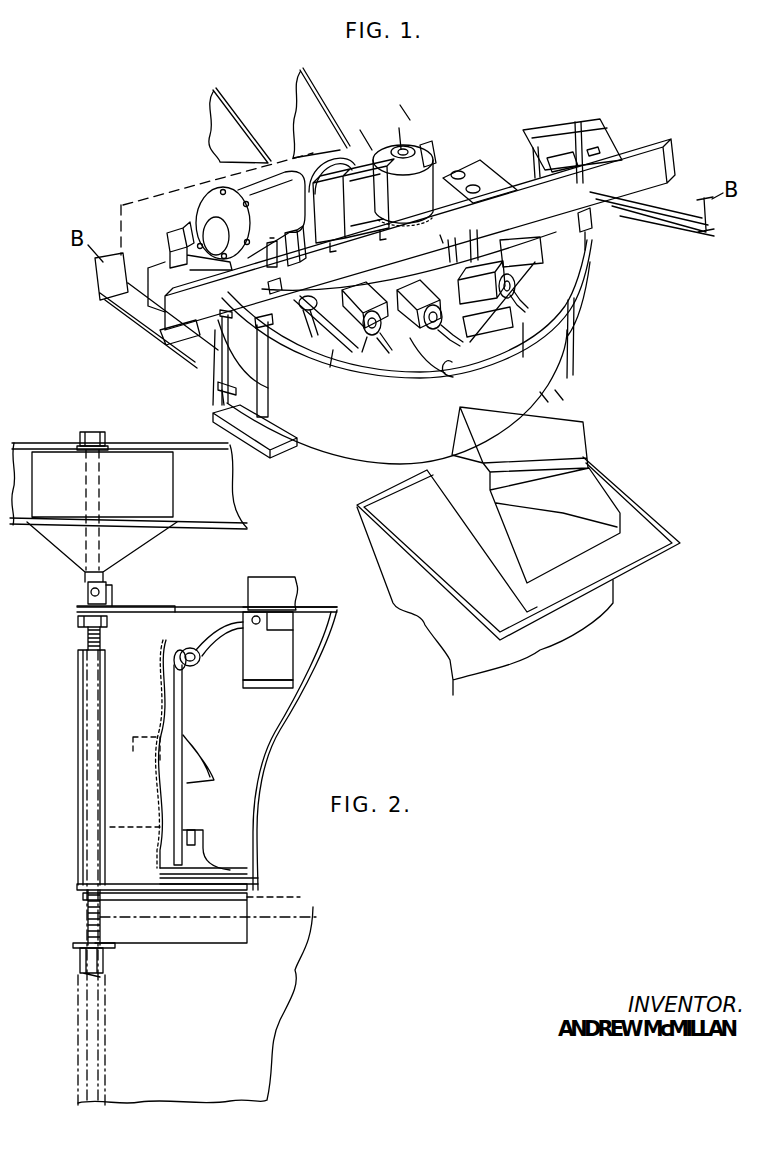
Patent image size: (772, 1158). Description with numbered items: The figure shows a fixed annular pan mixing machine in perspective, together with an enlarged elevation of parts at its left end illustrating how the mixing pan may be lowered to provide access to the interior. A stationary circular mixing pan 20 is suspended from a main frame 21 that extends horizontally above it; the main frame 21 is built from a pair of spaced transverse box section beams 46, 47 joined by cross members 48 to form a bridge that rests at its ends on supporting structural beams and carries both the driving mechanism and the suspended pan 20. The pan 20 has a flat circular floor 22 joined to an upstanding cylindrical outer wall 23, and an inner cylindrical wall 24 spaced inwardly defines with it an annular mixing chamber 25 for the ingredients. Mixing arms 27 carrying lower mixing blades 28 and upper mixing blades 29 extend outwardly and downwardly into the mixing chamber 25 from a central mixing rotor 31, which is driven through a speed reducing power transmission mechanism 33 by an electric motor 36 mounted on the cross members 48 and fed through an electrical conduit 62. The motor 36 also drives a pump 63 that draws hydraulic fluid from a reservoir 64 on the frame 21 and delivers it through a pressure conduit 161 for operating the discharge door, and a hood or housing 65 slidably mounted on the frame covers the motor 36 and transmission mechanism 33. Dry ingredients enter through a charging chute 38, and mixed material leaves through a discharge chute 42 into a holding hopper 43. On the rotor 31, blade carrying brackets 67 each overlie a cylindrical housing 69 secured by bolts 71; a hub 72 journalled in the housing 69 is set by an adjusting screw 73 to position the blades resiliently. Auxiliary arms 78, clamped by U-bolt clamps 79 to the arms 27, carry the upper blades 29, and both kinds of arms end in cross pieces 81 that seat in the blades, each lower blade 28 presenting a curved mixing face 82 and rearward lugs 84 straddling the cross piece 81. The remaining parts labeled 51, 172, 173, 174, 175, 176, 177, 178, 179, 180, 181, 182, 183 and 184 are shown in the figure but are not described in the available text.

In FIG. 1, the mixing pan 20 is at (597, 283).
In FIG. 2, the mixing pan 20 is at (325, 600).
In FIG. 1, the main frame 21 is at (629, 145).
In FIG. 2, the main frame 21 is at (151, 434).
In FIG. 1, the circular floor 22 is at (548, 310).
In FIG. 2, the circular floor 22 is at (260, 877).
In FIG. 1, the outer wall 23 is at (412, 403).
In FIG. 2, the outer wall 23 is at (320, 658).
In FIG. 1, the inner cylindrical wall 24 is at (458, 376).
In FIG. 1, the mixing chamber 25 is at (523, 323).
In FIG. 2, the mixing chamber 25 is at (272, 733).
In FIG. 1, the mixing arms 27 is at (533, 267).
In FIG. 2, the mixing arms 27 is at (180, 730).
In FIG. 1, the lower mixing blades 28 is at (525, 316).
In FIG. 2, the lower mixing blades 28 is at (207, 847).
In FIG. 1, the upper mixing blades 29 is at (427, 340).
In FIG. 2, the upper mixing blades 29 is at (163, 752).
In FIG. 1, the central mixing rotor 31 is at (444, 256).
In FIG. 1, the speed reducing power transmission mechanism 33 is at (403, 185).
In FIG. 1, the electric motor 36 is at (230, 188).
In FIG. 1, the charging chute 38 is at (323, 123).
In FIG. 1, the discharge chute 42 is at (580, 437).
In FIG. 1, the holding hopper 43 is at (650, 523).
In FIG. 1, the transverse beam 46 is at (663, 160).
In FIG. 1, the transverse beam 47 is at (580, 127).
In FIG. 1, the cross members 48 is at (223, 280).
In FIG. 2, the cross members 48 is at (43, 442).
In FIG. 1, the pulley 51 is at (417, 147).
In FIG. 1, the electrical conduit 62 is at (280, 266).
In FIG. 1, the pump 63 is at (181, 296).
In FIG. 1, the reservoir 64 is at (359, 168).
In FIG. 1, the hood or housing 65 is at (436, 120).
In FIG. 1, the mixer blade carrying brackets 67 is at (410, 293).
In FIG. 2, the mixer blade carrying brackets 67 is at (283, 587).
In FIG. 2, the cylindrical housing 69 is at (263, 683).
In FIG. 2, the bolts 71 is at (290, 630).
In FIG. 1, the hub 72 is at (367, 337).
In FIG. 2, the hub 72 is at (243, 630).
In FIG. 2, the adjusting screw 73 is at (268, 646).
In FIG. 2, the auxiliary arms 78 is at (176, 664).
In FIG. 2, the U-bolt clamp 79 is at (163, 687).
In FIG. 2, the cross pieces 81 is at (157, 833).
In FIG. 2, the curved mixing face 82 is at (220, 870).
In FIG. 2, the spaced lugs 84 is at (192, 833).
In FIG. 1, the pressure conduit 161 is at (229, 283).
In FIG. 2, the plate 172 is at (126, 605).
In FIG. 2, the angle bracket 173 is at (108, 592).
In FIG. 1, the support plate 174 is at (322, 369).
In FIG. 2, the support plate 174 is at (163, 608).
In FIG. 1, the funnel support 175 is at (587, 223).
In FIG. 2, the funnel support 175 is at (87, 588).
In FIG. 2, the nut 176 is at (80, 600).
In FIG. 1, the channel 177 is at (280, 443).
In FIG. 2, the channel 177 is at (143, 930).
In FIG. 1, the plate 178 is at (477, 173).
In FIG. 2, the plate 178 is at (80, 888).
In FIG. 1, the bolt 179 is at (252, 246).
In FIG. 2, the bolt 179 is at (65, 442).
In FIG. 2, the threaded bolt 180 is at (77, 620).
In FIG. 1, the tube 181 is at (263, 381).
In FIG. 2, the tube 181 is at (80, 728).
In FIG. 2, the washer 182 is at (80, 953).
In FIG. 2, the nut 183 is at (80, 960).
In FIG. 2, the lock nut 184 is at (100, 630).